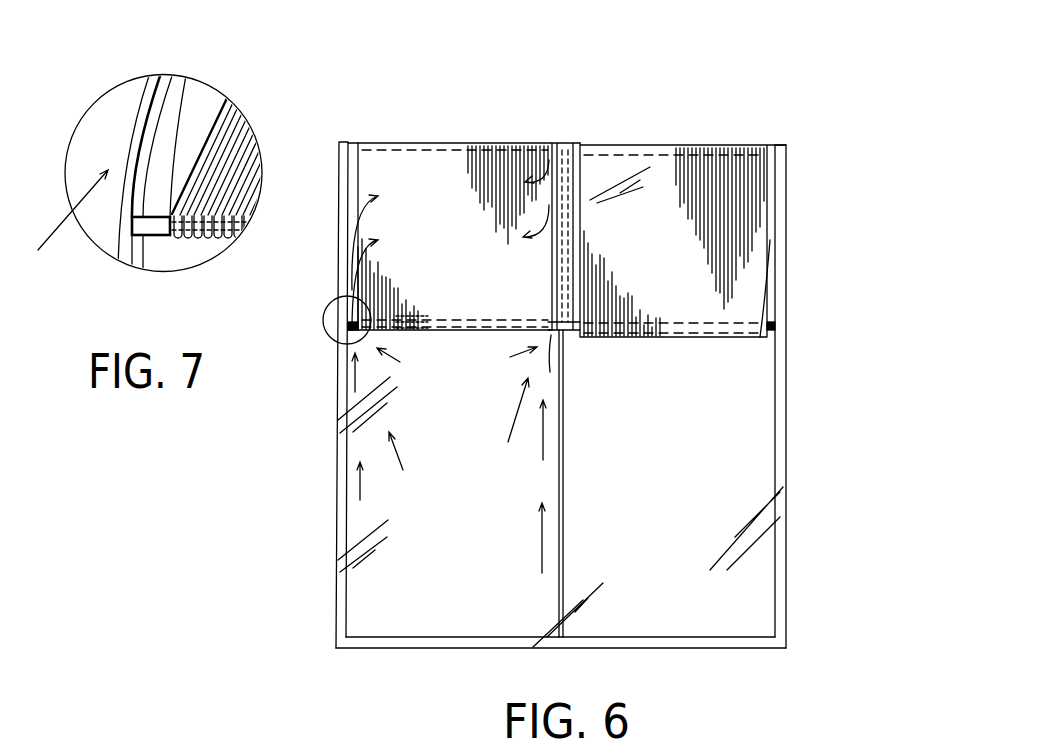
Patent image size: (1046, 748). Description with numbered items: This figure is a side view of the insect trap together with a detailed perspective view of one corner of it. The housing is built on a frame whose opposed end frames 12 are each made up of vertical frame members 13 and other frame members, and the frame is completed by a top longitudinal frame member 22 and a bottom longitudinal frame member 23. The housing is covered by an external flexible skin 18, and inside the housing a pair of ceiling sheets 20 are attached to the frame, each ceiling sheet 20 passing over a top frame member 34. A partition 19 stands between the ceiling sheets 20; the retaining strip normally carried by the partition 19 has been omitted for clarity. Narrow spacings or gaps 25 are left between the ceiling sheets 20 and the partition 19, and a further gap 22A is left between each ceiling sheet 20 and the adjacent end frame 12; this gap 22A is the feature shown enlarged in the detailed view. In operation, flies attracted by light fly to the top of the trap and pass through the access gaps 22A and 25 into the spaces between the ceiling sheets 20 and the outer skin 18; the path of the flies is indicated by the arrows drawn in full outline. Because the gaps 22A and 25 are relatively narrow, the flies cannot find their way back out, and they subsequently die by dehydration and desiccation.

In FIG. 7, the end frame 12 is at (62, 227).
In FIG. 6, the vertical frame member 13 is at (342, 512).
In FIG. 6, the external flexible skin 18 is at (620, 177).
In FIG. 6, the partition 19 is at (563, 507).
In FIG. 6, the ceiling sheet 20 is at (458, 231).
In FIG. 6, the top longitudinal frame member 22 is at (722, 327).
In FIG. 6, the gap 22A is at (770, 240).
In FIG. 6, the bottom longitudinal frame member 23 is at (463, 645).
In FIG. 6, the spacing or gap 25 is at (572, 277).
In FIG. 6, the top frame member 34 is at (617, 150).